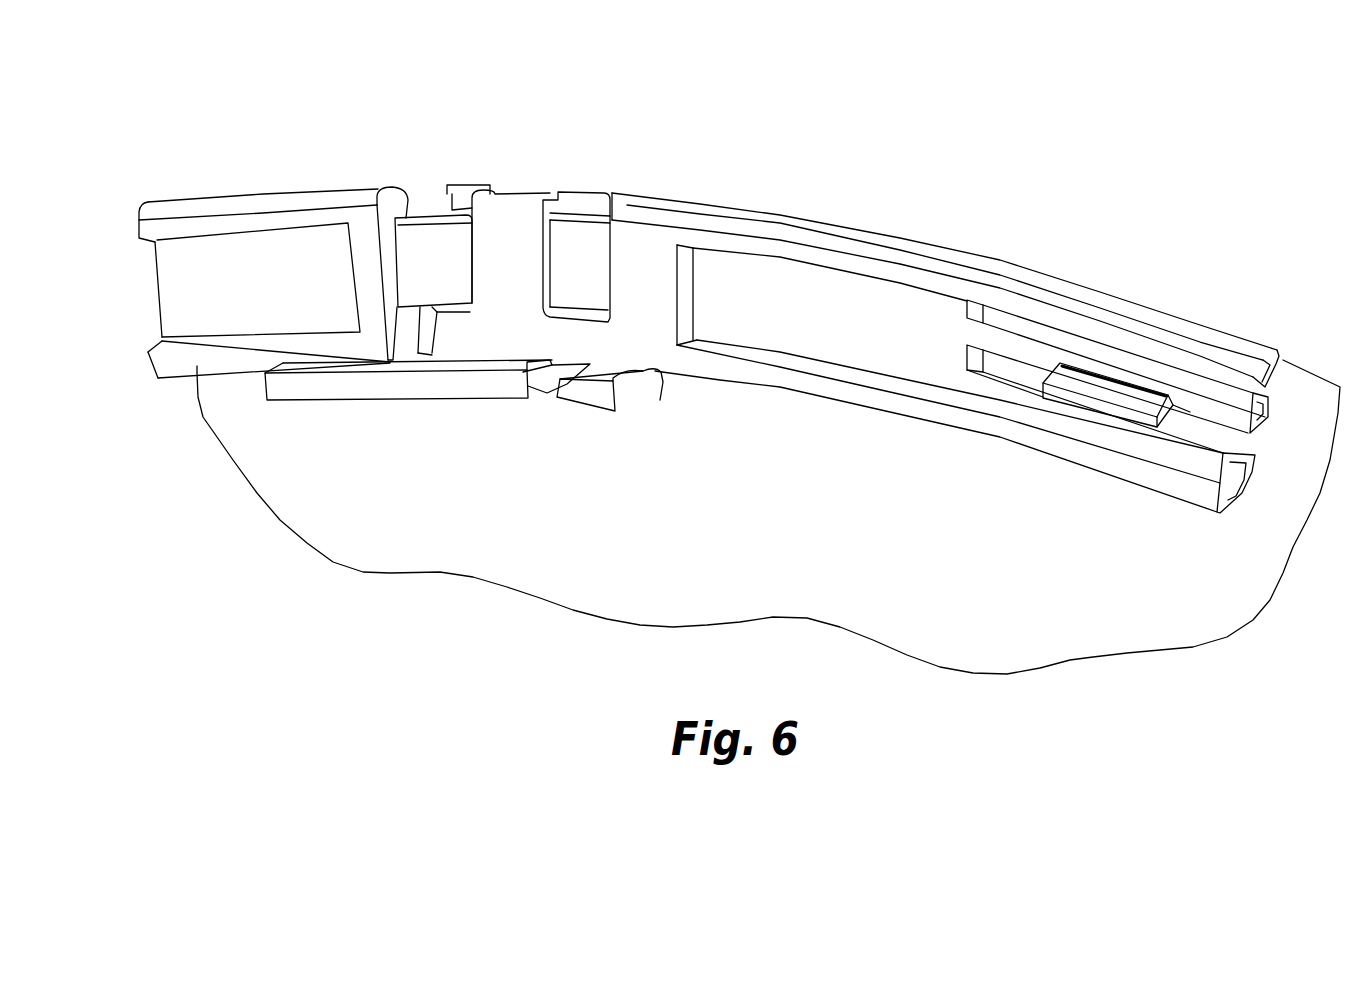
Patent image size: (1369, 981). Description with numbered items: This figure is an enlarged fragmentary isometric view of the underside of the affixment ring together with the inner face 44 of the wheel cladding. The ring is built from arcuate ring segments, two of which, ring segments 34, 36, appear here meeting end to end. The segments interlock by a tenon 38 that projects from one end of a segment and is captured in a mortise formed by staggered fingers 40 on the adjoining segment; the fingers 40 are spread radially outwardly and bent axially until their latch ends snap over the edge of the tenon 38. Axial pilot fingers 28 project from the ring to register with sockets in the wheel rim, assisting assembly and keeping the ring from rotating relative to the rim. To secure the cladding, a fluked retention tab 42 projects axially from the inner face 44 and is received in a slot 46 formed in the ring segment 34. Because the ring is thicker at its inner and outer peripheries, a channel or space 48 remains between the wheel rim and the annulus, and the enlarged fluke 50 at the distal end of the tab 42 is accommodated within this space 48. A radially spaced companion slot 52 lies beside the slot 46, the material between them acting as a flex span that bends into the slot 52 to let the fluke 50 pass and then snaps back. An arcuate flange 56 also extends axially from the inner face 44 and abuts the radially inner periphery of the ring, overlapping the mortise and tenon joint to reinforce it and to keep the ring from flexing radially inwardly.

The axial pilot finger 28 is at (623, 392).
The arcuate ring segment 34 is at (877, 397).
The arcuate ring segment 36 is at (203, 208).
The tenon 38 is at (578, 243).
The mortise finger 40 is at (508, 230).
The fluked retention tab 42 is at (1190, 413).
The inner face 44 is at (558, 543).
The slot 46 is at (1253, 440).
The channel or space 48 is at (210, 310).
The fluke 50 is at (1107, 392).
The companion slot 52 is at (1012, 310).
The arcuate flange 56 is at (410, 386).